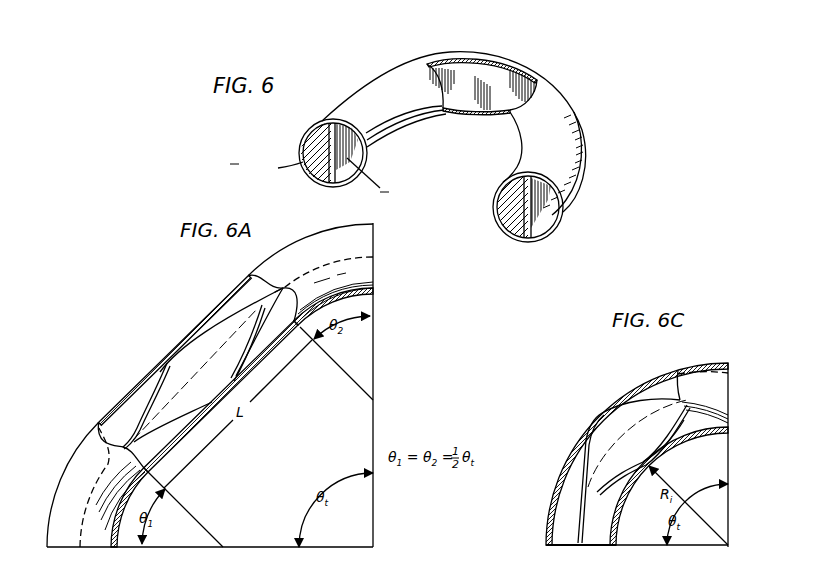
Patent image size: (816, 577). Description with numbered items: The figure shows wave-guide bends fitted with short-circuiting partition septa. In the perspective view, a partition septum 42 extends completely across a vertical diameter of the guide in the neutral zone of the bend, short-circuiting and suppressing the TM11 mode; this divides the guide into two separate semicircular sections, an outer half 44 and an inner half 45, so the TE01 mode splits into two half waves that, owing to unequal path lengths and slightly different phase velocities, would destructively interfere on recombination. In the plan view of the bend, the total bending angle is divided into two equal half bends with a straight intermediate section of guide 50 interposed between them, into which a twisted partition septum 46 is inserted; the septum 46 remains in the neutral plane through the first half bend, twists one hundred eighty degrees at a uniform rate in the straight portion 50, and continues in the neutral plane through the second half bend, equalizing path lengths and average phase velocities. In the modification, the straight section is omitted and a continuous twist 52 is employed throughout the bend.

In FIG. 6, the partition septum 42 is at (497, 76).
In FIG. 6, the outer semicircular section 44 is at (311, 137).
In FIG. 6, the inner semicircular section 45 is at (357, 150).
In FIG. 6A, the twisted partition septum 46 is at (187, 367).
In FIG. 6A, the straight intermediate section of guide 50 is at (228, 297).
In FIG. 6C, the continuous twist 52 is at (618, 427).